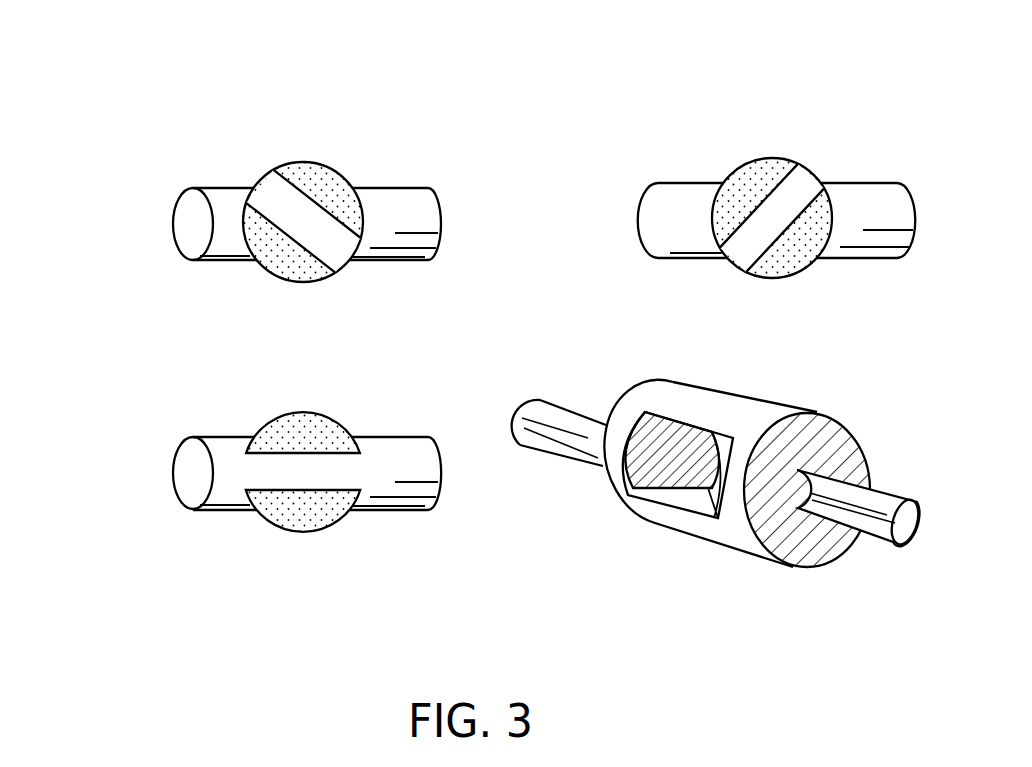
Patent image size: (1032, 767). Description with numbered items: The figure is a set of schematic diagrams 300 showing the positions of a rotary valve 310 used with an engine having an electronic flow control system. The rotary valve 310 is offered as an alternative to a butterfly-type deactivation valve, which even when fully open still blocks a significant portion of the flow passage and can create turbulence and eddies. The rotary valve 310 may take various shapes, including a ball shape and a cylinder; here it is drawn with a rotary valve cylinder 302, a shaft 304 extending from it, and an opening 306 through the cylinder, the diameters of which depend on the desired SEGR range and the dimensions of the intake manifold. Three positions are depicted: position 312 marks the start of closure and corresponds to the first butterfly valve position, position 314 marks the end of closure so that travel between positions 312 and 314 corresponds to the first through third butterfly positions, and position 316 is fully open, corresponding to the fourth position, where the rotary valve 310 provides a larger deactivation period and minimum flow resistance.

The set of schematic diagrams 300 is at (434, 103).
The rotary valve cylinder 302 is at (797, 412).
The shaft 304 is at (880, 488).
The opening 306 is at (637, 483).
The rotary valve 310 is at (727, 484).
The position 312 is at (324, 331).
The position 314 is at (793, 327).
The position 316 is at (324, 580).